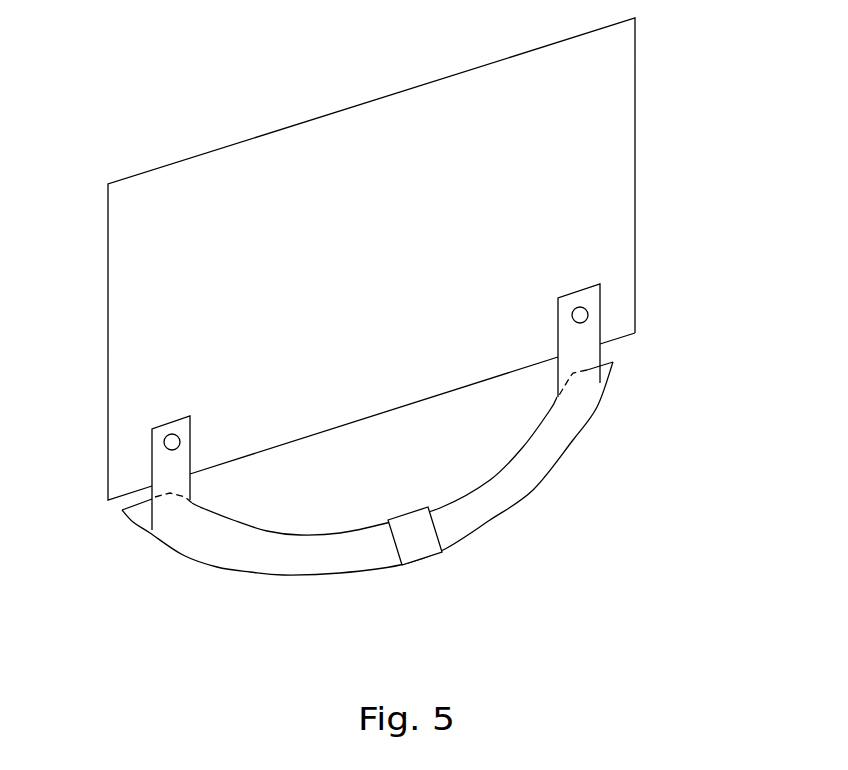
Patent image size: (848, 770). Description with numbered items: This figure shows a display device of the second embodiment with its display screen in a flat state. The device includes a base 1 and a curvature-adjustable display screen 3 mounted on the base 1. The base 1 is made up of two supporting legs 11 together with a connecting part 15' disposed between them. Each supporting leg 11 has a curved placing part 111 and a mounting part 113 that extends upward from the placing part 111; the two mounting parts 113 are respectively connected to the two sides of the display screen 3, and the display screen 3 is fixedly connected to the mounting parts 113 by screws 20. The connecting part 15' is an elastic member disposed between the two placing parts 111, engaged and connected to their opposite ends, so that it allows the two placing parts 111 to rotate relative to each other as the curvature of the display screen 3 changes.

The base 1 is at (533, 490).
The display screen 3 is at (388, 196).
The supporting leg 11 is at (435, 460).
The screw 20 is at (164, 442).
The placing part 111 is at (422, 493).
The mounting part 113 is at (172, 475).
The connecting part 15' is at (441, 566).